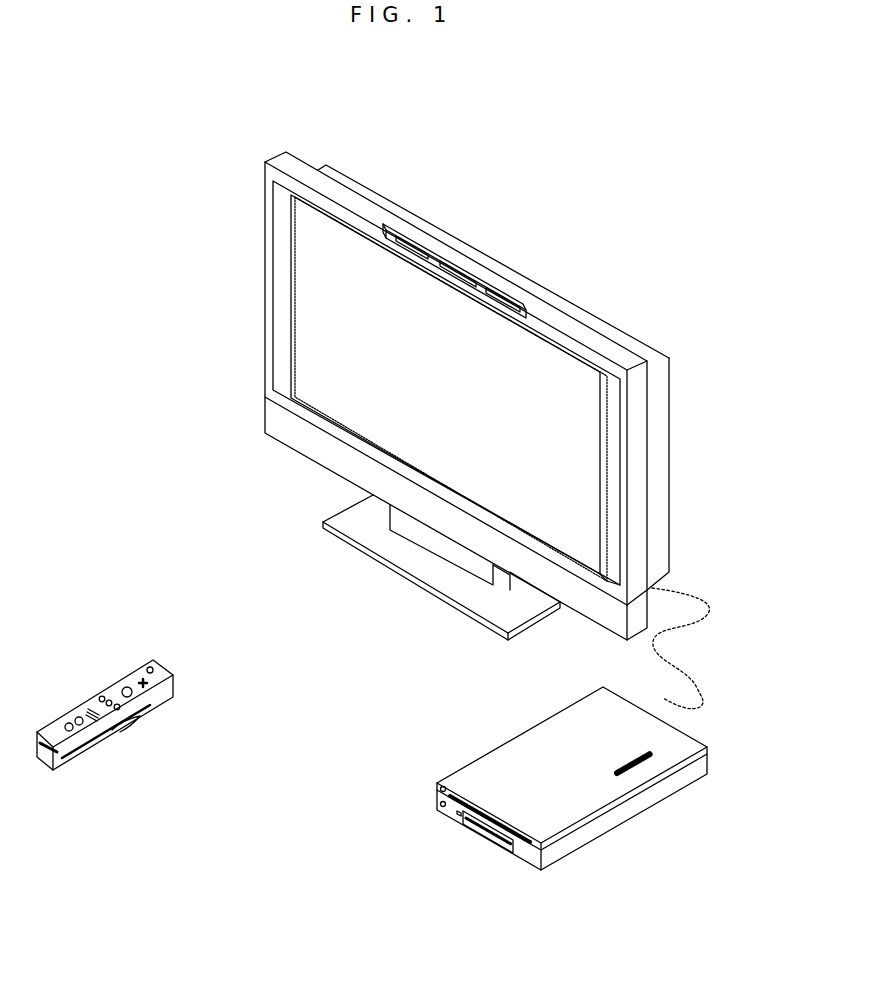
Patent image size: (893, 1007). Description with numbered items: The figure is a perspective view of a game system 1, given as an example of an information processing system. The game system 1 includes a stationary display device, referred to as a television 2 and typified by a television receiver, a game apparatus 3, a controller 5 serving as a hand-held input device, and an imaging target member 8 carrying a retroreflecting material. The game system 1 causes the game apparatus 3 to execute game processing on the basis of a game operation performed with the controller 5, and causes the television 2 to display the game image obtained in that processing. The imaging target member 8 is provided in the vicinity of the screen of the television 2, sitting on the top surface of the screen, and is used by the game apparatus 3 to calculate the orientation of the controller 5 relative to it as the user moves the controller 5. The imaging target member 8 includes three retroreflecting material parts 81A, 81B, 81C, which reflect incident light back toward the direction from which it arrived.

The game system 1 is at (132, 183).
The television 2 is at (313, 142).
The game apparatus 3 is at (666, 776).
The controller 5 is at (155, 629).
The imaging target member 8 is at (440, 244).
The retroreflecting material part 81A is at (392, 224).
The retroreflecting material part 81B is at (455, 265).
The retroreflecting material part 81C is at (512, 296).